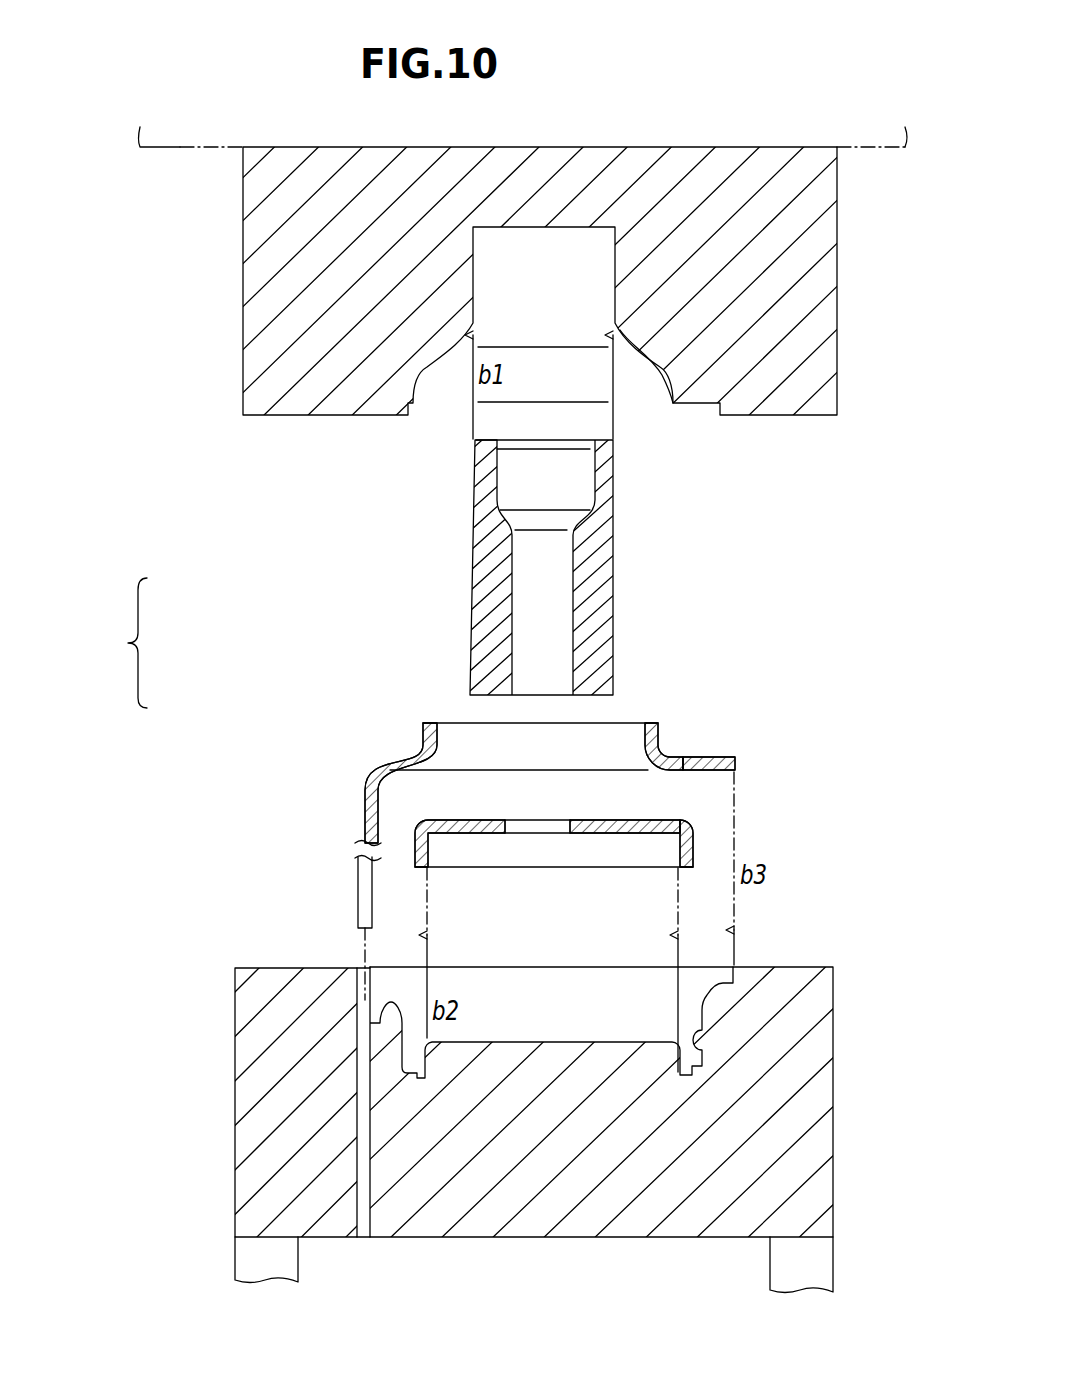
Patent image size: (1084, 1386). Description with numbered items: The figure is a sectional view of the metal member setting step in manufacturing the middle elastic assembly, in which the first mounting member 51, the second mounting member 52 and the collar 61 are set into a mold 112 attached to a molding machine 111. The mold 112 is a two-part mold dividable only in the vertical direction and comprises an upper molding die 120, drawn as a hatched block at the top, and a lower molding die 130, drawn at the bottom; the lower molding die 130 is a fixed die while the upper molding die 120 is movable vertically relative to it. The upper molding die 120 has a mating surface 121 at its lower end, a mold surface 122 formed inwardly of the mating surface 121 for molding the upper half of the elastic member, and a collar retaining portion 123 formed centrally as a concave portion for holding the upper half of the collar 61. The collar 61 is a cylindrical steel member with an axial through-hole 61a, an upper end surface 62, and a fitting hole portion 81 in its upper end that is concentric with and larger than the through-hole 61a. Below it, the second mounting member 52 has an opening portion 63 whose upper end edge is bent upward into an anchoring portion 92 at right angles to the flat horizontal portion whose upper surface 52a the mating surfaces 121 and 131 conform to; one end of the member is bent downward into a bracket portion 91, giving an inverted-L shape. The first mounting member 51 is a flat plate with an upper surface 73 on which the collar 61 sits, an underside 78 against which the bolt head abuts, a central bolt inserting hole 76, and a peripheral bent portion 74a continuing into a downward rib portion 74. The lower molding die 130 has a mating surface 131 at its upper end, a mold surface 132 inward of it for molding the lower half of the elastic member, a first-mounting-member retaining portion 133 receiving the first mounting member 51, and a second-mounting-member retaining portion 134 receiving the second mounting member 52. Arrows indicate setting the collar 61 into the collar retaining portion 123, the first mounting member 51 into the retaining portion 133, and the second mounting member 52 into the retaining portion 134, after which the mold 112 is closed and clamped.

The molding machine 111 is at (185, 150).
The mold 112 is at (116, 643).
The upper molding die 120 is at (280, 418).
The mating surface 121 is at (772, 418).
The mold surface 122 is at (656, 375).
The collar retaining portion 123 is at (614, 255).
The collar 61 is at (472, 583).
The through-hole 61a is at (512, 627).
The upper end surface 62 is at (482, 434).
The fitting hole portion 81 is at (500, 503).
The bracket portion 91 is at (365, 797).
The anchoring portion 92 is at (660, 728).
The opening portion 63 is at (652, 766).
The second mounting member 52 is at (737, 752).
The upper surface 52a is at (688, 752).
The first mounting member 51 is at (478, 834).
The bolt inserting hole 76 is at (520, 828).
The underside 78 is at (582, 834).
The upper surface 73 is at (622, 834).
The rib portion 74 is at (672, 850).
The bent portion 74a is at (692, 828).
The lower molding die 130 is at (245, 967).
The mating surface 131 is at (805, 966).
The mold surface 132 is at (702, 1050).
The first-mounting-member retaining portion 133 is at (680, 1078).
The second-mounting-member retaining portion 134 is at (712, 998).